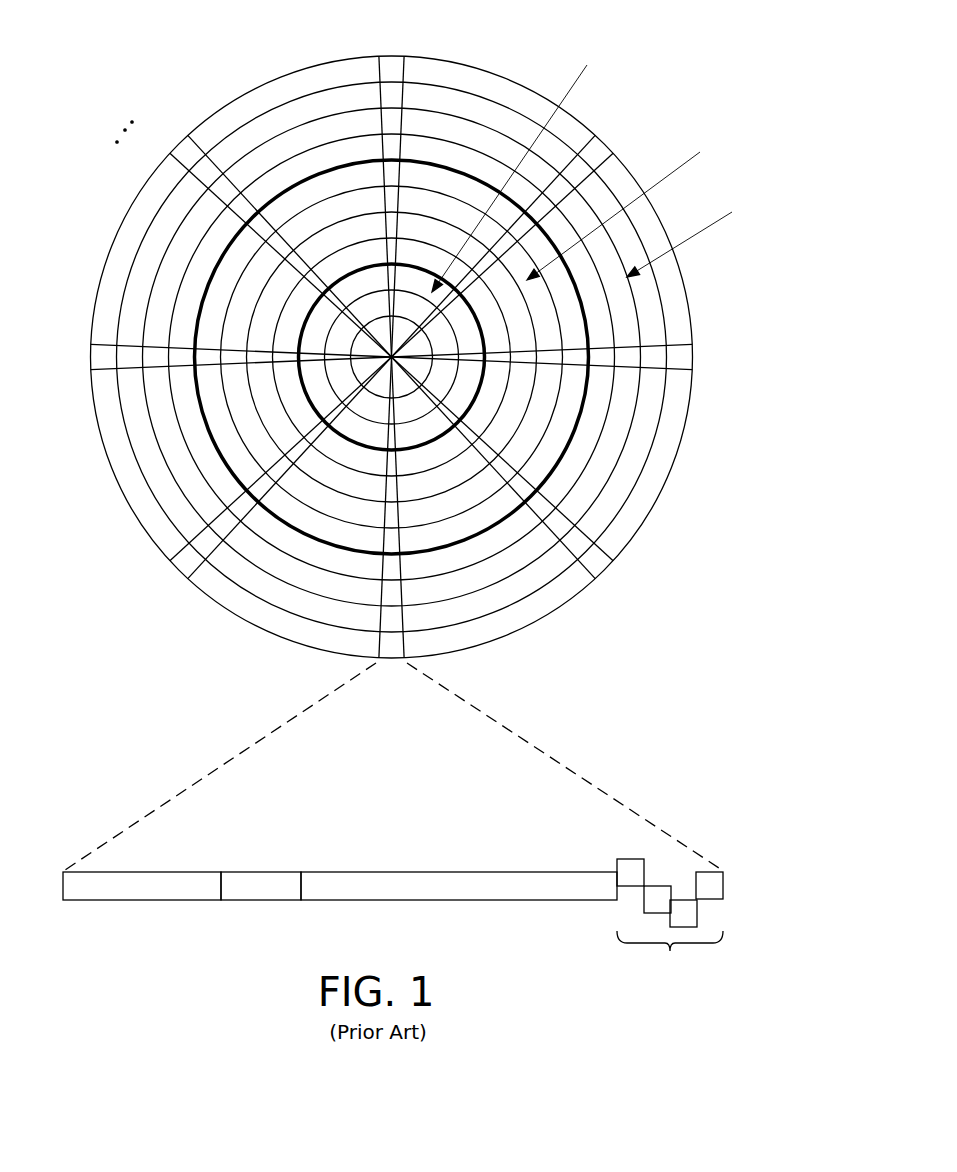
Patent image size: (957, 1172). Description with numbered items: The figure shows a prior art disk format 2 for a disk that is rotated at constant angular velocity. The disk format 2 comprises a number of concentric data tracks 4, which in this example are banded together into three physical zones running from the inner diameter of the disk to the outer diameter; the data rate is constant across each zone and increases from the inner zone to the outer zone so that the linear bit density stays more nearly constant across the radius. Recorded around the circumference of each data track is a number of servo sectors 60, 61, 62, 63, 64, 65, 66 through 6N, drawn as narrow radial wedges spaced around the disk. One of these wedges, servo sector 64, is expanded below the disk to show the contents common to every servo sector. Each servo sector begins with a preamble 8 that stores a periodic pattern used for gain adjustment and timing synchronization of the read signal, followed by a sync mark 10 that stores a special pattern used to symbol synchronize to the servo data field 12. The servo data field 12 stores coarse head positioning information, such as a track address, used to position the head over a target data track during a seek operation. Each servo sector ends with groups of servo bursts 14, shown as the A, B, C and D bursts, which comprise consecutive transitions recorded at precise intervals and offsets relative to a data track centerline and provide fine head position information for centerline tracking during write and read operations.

The disk format 2 is at (421, 437).
The data tracks 4 is at (497, 115).
The servo sector 60 is at (392, 65).
The servo sector 61 is at (598, 152).
The servo sector 62 is at (687, 360).
The servo sector 63 is at (598, 565).
The servo sector 64 is at (255, 730).
The servo sector 65 is at (183, 567).
The servo sector 66 is at (95, 358).
The servo sector 6N is at (261, 227).
The preamble 8 is at (124, 894).
The sync mark 10 is at (258, 894).
The servo data field 12 is at (446, 894).
The servo bursts 14 is at (595, 836).